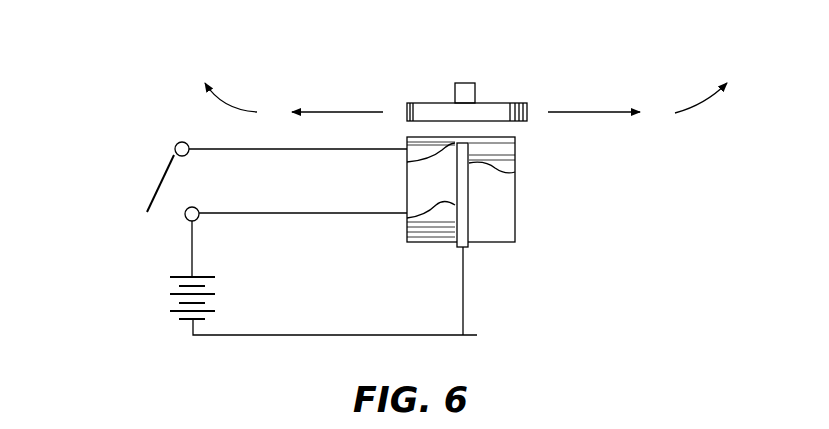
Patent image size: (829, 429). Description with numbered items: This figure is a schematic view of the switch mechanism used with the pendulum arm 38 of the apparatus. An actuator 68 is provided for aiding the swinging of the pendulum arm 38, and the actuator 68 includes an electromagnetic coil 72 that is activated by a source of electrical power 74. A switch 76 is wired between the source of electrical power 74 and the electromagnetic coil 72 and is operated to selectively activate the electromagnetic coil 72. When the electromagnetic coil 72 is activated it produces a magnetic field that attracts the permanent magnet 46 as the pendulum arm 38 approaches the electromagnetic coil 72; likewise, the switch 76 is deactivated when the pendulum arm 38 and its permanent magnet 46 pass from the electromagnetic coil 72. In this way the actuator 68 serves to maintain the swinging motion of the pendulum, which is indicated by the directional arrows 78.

The pendulum arm 38 is at (470, 93).
The permanent magnet 46 is at (528, 121).
The actuator 68 is at (527, 216).
The electromagnetic coil 72 is at (478, 233).
The source of electrical power 74 is at (212, 300).
The switch 76 is at (163, 157).
The directional arrows 78 is at (638, 95).